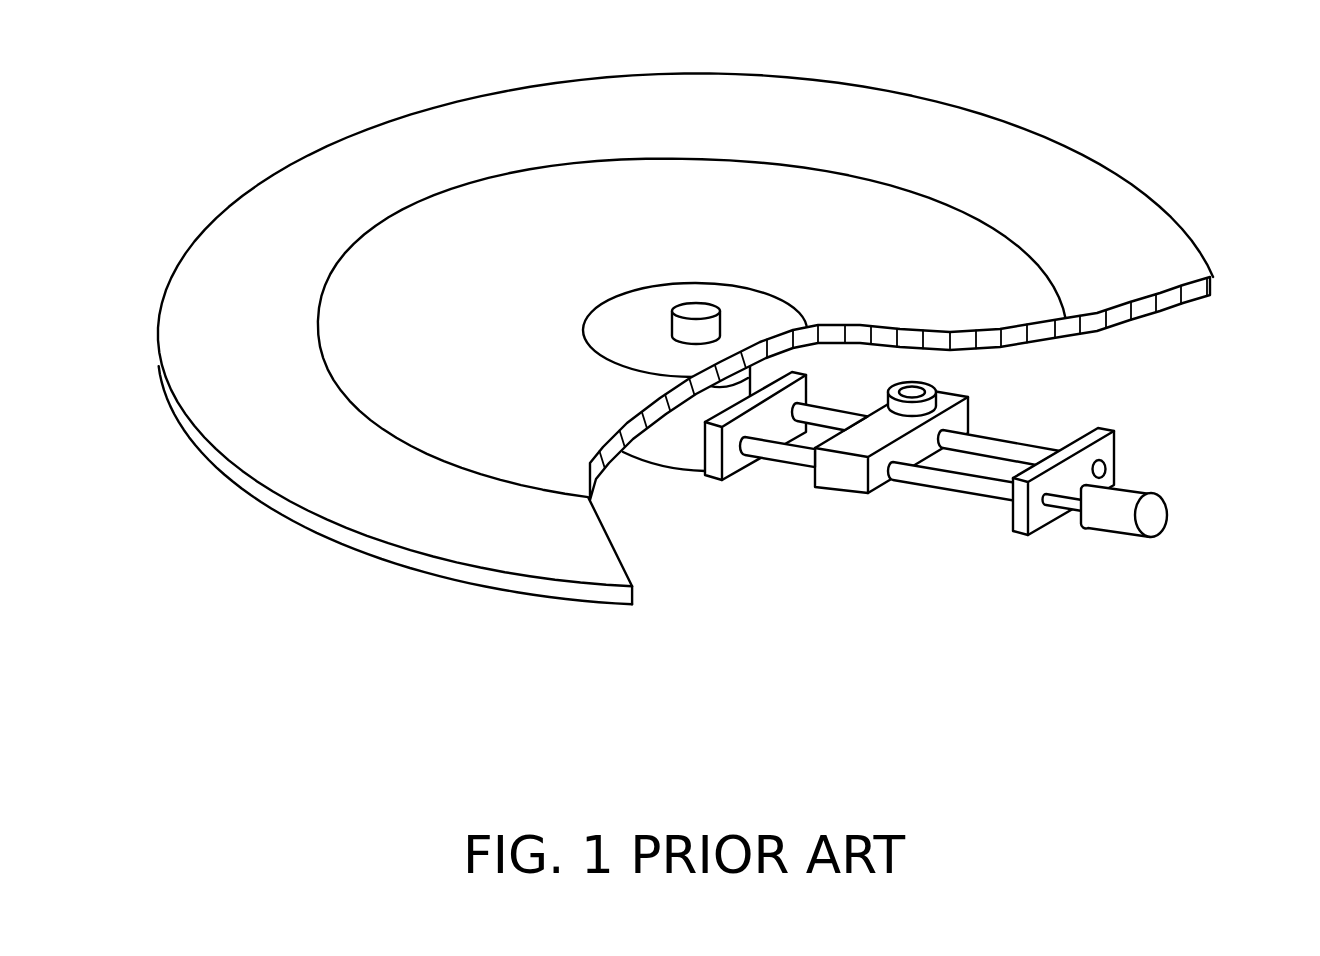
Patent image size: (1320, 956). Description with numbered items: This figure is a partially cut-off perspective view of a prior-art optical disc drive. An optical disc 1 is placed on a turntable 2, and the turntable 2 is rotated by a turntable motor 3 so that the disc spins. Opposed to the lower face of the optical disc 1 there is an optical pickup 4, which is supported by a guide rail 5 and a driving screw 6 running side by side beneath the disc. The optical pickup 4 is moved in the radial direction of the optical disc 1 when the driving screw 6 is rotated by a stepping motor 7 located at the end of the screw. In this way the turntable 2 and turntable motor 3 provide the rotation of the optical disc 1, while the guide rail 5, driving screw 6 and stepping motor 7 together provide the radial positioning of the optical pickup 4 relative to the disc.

The optical disc 1 is at (1140, 233).
The turntable 2 is at (698, 312).
The turntable motor 3 is at (663, 442).
The optical pickup 4 is at (912, 388).
The guide rail 5 is at (1017, 443).
The driving screw 6 is at (968, 477).
The stepping motor 7 is at (1117, 513).